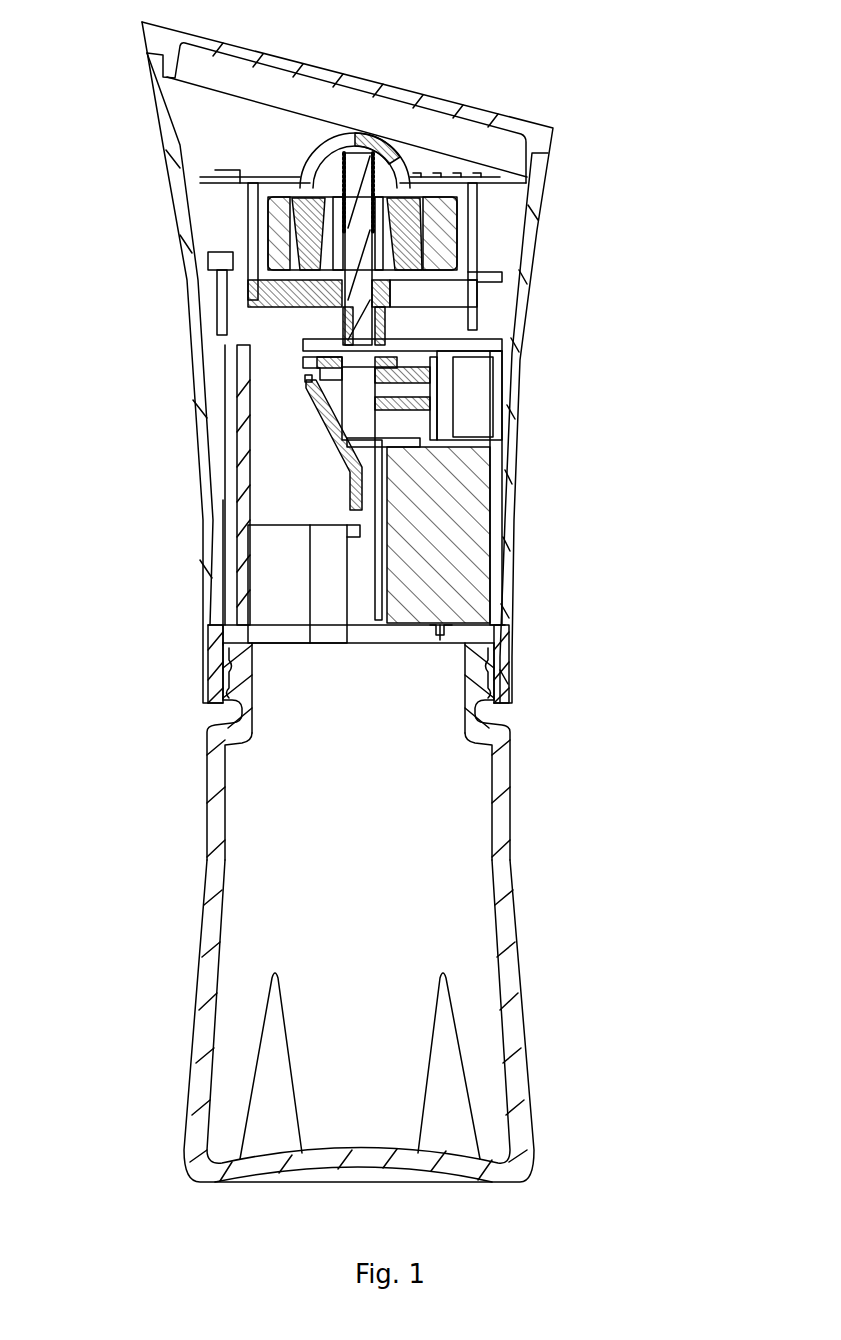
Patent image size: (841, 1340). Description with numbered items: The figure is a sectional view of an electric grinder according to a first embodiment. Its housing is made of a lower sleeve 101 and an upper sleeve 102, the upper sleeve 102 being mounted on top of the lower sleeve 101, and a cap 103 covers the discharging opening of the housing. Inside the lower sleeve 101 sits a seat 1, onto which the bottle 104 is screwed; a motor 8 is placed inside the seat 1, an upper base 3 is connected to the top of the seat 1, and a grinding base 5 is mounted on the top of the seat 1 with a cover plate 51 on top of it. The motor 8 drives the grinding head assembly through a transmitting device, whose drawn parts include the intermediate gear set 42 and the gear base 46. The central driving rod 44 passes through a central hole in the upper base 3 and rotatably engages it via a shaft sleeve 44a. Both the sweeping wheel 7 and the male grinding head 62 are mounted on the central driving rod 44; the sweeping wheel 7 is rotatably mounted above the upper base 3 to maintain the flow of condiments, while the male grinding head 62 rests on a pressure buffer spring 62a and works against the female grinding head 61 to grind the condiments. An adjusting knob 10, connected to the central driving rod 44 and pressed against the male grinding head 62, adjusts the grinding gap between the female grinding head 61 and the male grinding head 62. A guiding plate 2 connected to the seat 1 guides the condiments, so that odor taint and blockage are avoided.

The seat 1 is at (240, 625).
The guiding plate 2 is at (335, 413).
The upper base 3 is at (497, 343).
The grinding base 5 is at (480, 277).
The sweeping wheel 7 is at (468, 300).
The motor 8 is at (455, 567).
The adjusting knob 10 is at (377, 133).
The intermediate gear set 42 is at (507, 452).
The central driving rod 44 is at (350, 340).
The shaft sleeve 44a is at (345, 332).
The gear base 46 is at (495, 381).
The cover plate 51 is at (508, 182).
The female grinding head 61 is at (440, 235).
The male grinding head 62 is at (330, 230).
The pressure buffer spring 62a is at (340, 242).
The lower sleeve 101 is at (514, 683).
The upper sleeve 102 is at (507, 513).
The cap 103 is at (423, 103).
The bottle 104 is at (470, 891).